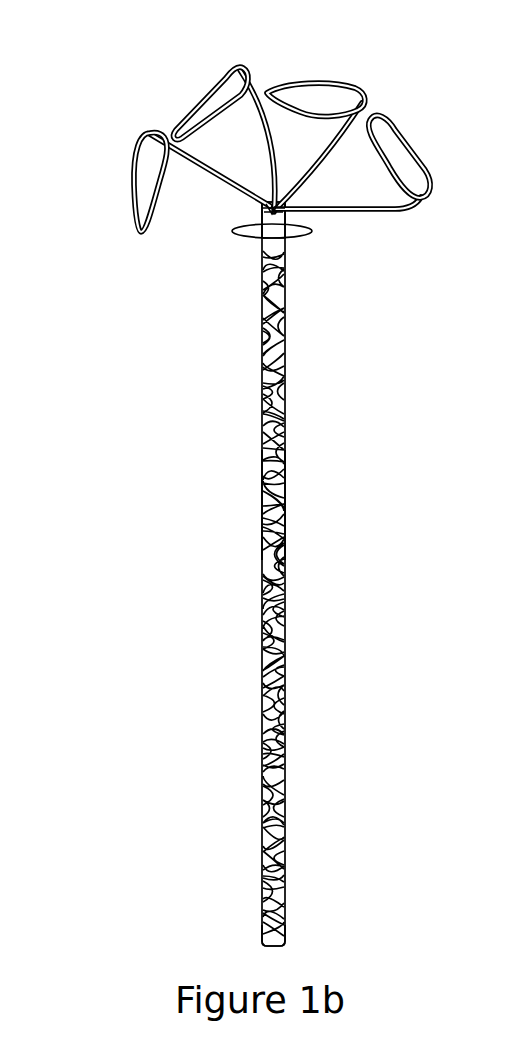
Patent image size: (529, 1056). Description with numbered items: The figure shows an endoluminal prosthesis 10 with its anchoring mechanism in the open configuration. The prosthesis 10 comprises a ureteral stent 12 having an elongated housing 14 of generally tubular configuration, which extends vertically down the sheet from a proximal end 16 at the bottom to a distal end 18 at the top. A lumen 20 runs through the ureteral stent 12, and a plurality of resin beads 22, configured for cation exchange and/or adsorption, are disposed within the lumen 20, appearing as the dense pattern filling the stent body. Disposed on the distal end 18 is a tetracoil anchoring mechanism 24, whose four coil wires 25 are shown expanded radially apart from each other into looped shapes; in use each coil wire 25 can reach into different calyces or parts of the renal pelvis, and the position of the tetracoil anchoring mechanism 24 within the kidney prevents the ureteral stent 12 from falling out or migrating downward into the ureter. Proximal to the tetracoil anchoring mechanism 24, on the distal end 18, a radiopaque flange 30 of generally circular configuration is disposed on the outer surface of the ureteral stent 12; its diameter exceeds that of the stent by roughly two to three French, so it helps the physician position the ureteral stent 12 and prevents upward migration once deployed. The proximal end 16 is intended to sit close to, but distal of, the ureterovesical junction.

The prosthesis 10 is at (90, 240).
The ureteral stent 12 is at (263, 420).
The elongated housing 14 is at (263, 511).
The proximal end 16 is at (263, 939).
The distal end 18 is at (258, 198).
The lumen 20 is at (286, 272).
The resin beads 22 is at (283, 645).
The tetracoil anchoring mechanism 24 is at (420, 203).
The coil wires 25 is at (380, 120).
The radiopaque flange 30 is at (312, 232).